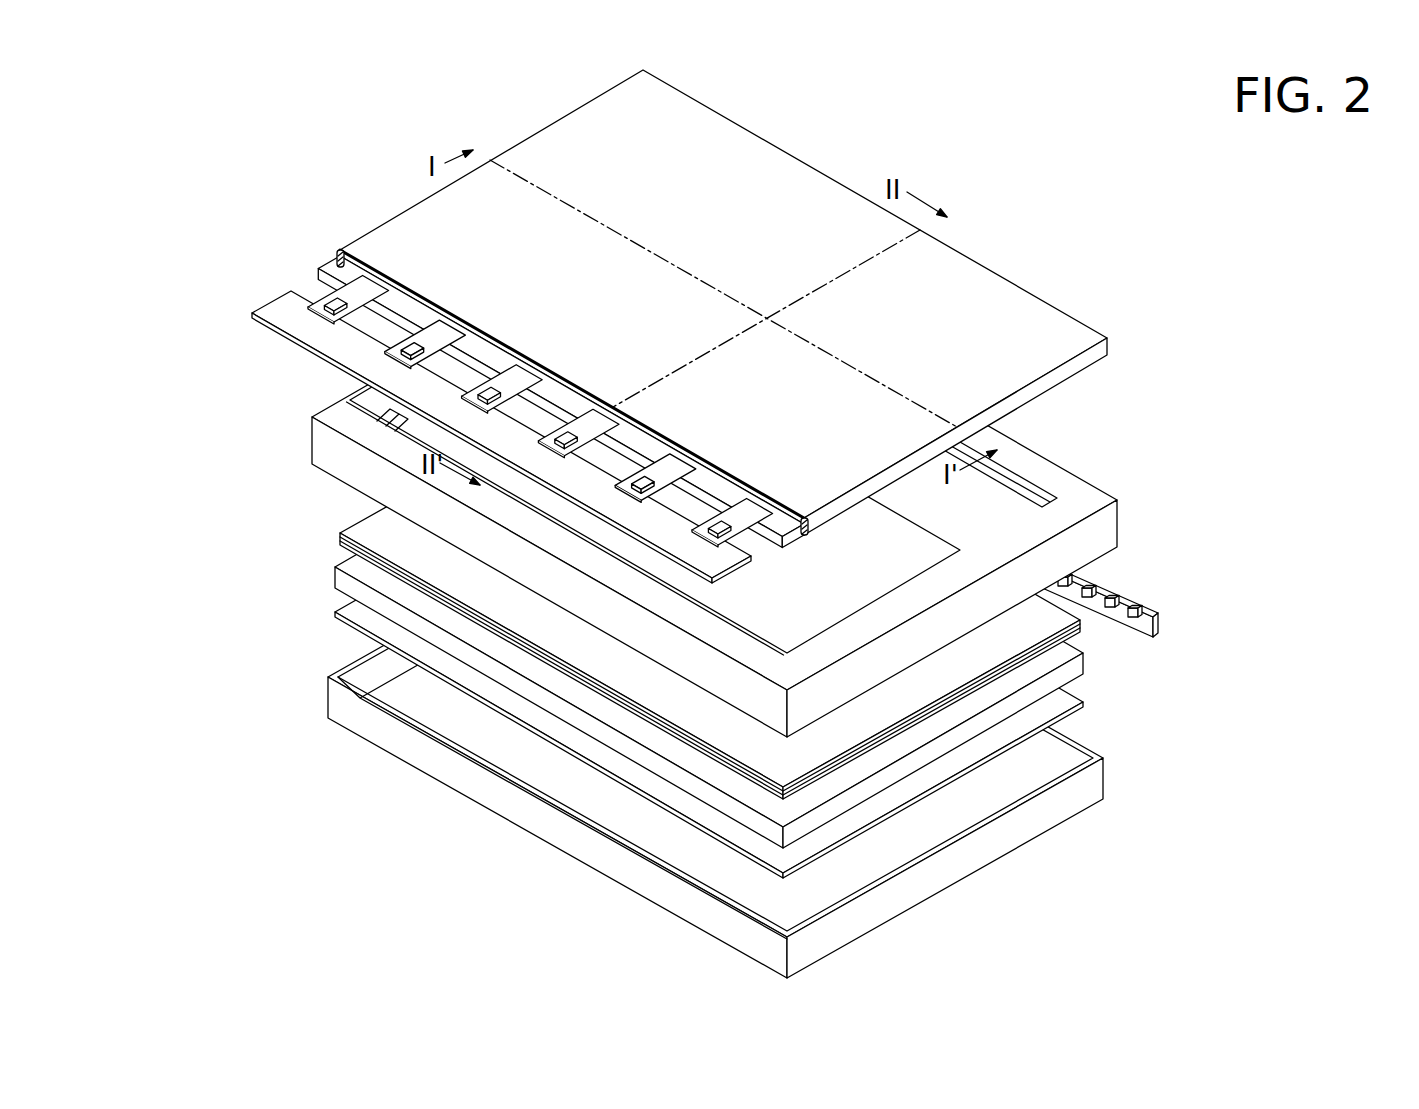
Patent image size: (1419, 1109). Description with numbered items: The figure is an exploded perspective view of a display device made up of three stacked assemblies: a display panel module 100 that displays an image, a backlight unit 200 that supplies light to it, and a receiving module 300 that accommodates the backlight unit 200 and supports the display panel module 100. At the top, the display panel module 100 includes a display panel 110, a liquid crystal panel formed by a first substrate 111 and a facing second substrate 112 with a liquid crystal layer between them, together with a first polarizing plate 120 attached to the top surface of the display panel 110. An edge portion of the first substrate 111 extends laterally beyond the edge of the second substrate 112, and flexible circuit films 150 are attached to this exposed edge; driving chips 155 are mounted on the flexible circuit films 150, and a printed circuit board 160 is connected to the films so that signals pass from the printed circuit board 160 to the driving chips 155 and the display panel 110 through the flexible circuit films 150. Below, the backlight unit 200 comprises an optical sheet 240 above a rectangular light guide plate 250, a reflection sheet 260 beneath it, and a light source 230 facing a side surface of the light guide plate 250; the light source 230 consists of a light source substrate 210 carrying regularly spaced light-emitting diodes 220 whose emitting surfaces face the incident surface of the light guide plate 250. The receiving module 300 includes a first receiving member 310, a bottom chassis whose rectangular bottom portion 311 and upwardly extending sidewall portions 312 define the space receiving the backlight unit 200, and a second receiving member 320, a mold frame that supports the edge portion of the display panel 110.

The display panel module 100 is at (746, 309).
The display panel 110 is at (712, 309).
The first substrate 111 is at (777, 527).
The second substrate 112 is at (727, 475).
The first polarizing plate 120 is at (573, 387).
The flexible circuit films 150 is at (357, 289).
The driving chips 155 is at (331, 306).
The printed circuit board 160 is at (276, 308).
The backlight unit 200 is at (841, 622).
The light source substrate 210 is at (1107, 581).
The light-emitting diodes 220 is at (1122, 592).
The light source 230 is at (1163, 591).
The optical sheet 240 is at (1091, 621).
The light guide plate 250 is at (1072, 672).
The reflection sheet 260 is at (1073, 712).
The receiving module 300 is at (734, 602).
The first receiving member 310 is at (644, 738).
The bottom portion 311 is at (404, 688).
The sidewall portions 312 is at (330, 698).
The second receiving member 320 is at (183, 690).